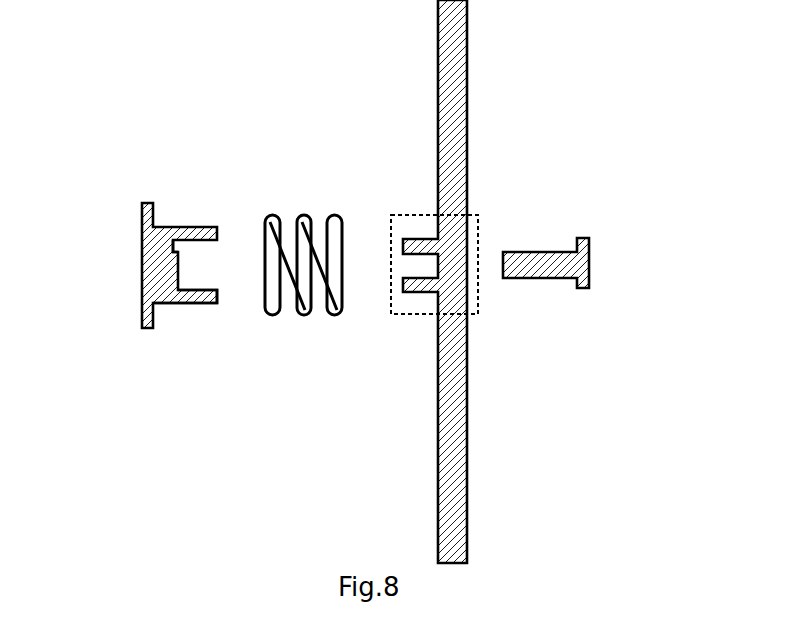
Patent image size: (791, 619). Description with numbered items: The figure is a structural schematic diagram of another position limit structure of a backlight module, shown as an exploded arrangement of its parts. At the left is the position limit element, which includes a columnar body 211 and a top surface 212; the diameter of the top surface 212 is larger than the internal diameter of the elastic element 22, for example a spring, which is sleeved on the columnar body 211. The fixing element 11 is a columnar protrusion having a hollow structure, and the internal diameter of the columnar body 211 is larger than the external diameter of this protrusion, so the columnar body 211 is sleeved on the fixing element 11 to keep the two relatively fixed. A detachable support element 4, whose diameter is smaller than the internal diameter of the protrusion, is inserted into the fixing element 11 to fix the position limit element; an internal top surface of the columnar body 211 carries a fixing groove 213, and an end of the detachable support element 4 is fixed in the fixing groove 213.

The fixing element 11 is at (478, 215).
The detachable support element 4 is at (590, 265).
The top surface 212 is at (142, 268).
The columnar body 211 is at (182, 303).
The fixing groove 213 is at (178, 253).
The elastic element 22 is at (305, 315).